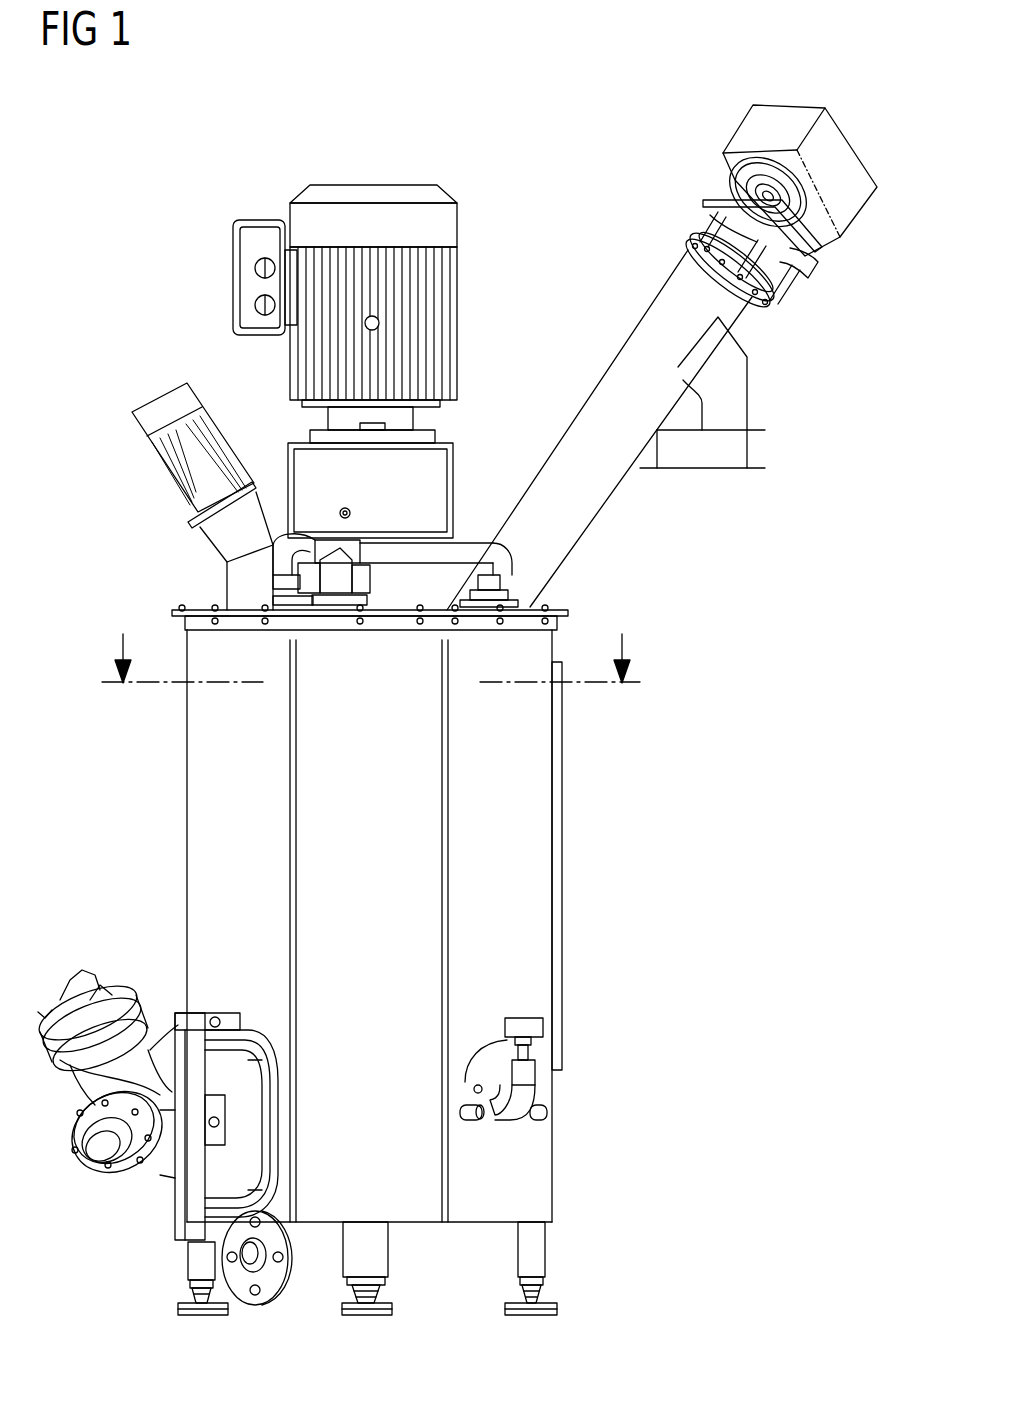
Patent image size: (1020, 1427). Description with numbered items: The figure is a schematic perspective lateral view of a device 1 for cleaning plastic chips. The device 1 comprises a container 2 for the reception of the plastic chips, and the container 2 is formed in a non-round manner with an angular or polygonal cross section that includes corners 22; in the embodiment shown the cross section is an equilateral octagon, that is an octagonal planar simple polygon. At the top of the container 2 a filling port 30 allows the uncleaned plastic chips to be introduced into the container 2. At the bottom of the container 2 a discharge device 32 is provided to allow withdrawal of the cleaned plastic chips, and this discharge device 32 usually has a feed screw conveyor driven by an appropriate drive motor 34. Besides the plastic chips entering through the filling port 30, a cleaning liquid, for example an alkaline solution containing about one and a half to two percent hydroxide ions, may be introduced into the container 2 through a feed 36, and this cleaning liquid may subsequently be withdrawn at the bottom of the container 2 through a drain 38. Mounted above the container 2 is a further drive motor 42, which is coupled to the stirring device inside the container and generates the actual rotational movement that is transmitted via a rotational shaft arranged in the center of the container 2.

The device for cleaning plastic chips 1 is at (716, 572).
The container 2 is at (540, 915).
The corners 22 is at (553, 1165).
The filling port 30 is at (160, 403).
The discharge device 32 is at (155, 1105).
The drive motor 34 is at (786, 111).
The feed 36 is at (463, 550).
The drain 38 is at (270, 1265).
The drive motor 42 is at (450, 226).